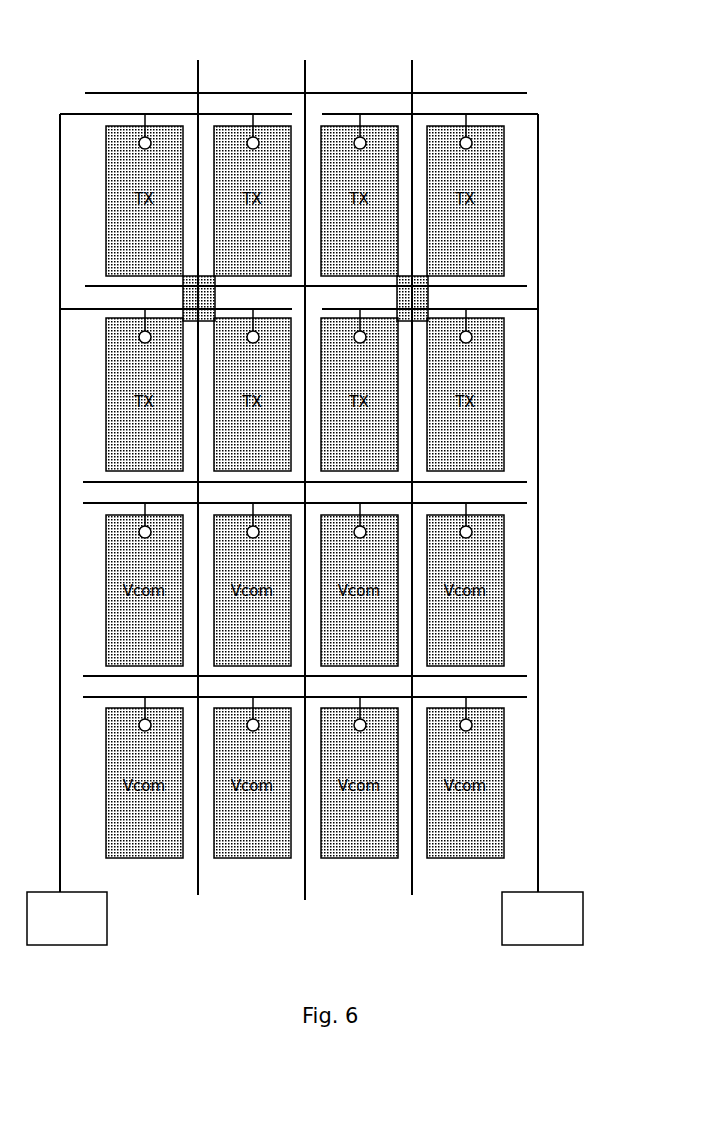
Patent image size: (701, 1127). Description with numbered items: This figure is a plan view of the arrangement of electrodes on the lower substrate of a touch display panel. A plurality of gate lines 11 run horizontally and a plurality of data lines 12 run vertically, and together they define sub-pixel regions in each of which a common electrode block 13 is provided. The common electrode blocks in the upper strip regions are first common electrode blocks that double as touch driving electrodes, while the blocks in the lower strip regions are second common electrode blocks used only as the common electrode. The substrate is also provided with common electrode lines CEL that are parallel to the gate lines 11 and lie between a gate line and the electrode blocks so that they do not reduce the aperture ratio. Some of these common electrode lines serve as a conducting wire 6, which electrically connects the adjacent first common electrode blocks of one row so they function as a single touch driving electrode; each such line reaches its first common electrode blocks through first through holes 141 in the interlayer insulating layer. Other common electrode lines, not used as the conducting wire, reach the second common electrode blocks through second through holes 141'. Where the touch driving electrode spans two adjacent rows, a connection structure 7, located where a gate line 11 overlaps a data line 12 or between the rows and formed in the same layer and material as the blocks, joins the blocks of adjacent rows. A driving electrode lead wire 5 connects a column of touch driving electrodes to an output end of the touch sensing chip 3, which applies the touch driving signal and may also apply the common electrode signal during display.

The gate line 11 is at (126, 92).
The data line 12 is at (201, 82).
The conducting wire 6 is at (271, 113).
The first through hole 141 is at (372, 81).
The common electrode block 13 is at (446, 135).
The connection structure 7 is at (424, 295).
The second through hole 141' is at (540, 326).
The common electrode line CEL is at (513, 503).
The driving electrode lead wire 5 is at (538, 752).
The touch sensing chip 3 is at (563, 892).